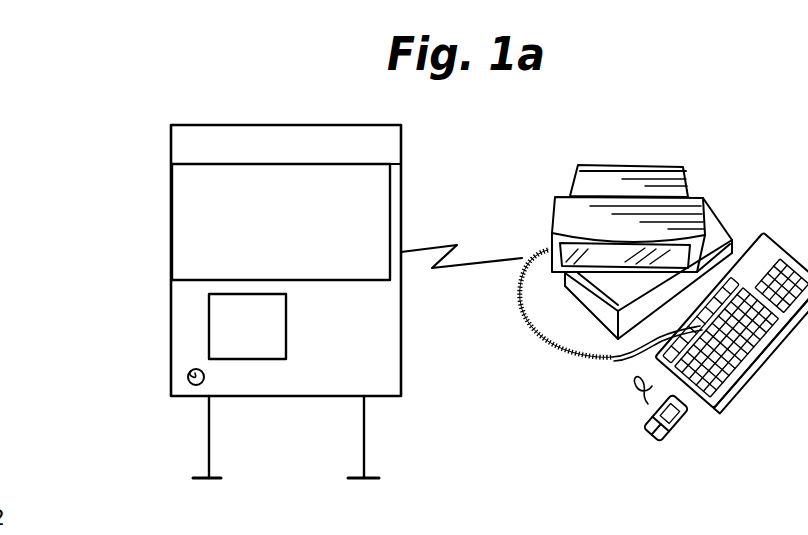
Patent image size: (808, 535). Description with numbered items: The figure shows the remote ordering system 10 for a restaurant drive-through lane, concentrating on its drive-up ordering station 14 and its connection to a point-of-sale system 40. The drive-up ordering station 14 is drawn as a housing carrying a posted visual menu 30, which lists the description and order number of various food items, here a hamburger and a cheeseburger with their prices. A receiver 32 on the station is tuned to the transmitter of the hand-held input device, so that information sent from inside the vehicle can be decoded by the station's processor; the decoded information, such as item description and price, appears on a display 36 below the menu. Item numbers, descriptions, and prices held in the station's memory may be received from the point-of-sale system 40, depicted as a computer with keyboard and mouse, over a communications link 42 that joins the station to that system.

The remote ordering system 10 is at (152, 158).
The drive-up ordering station 14 is at (401, 182).
The posted visual menu 30 is at (184, 190).
The receiver 32 is at (192, 372).
The display 36 is at (278, 319).
The point-of-sale system 40 is at (675, 157).
The communications link 42 is at (455, 270).